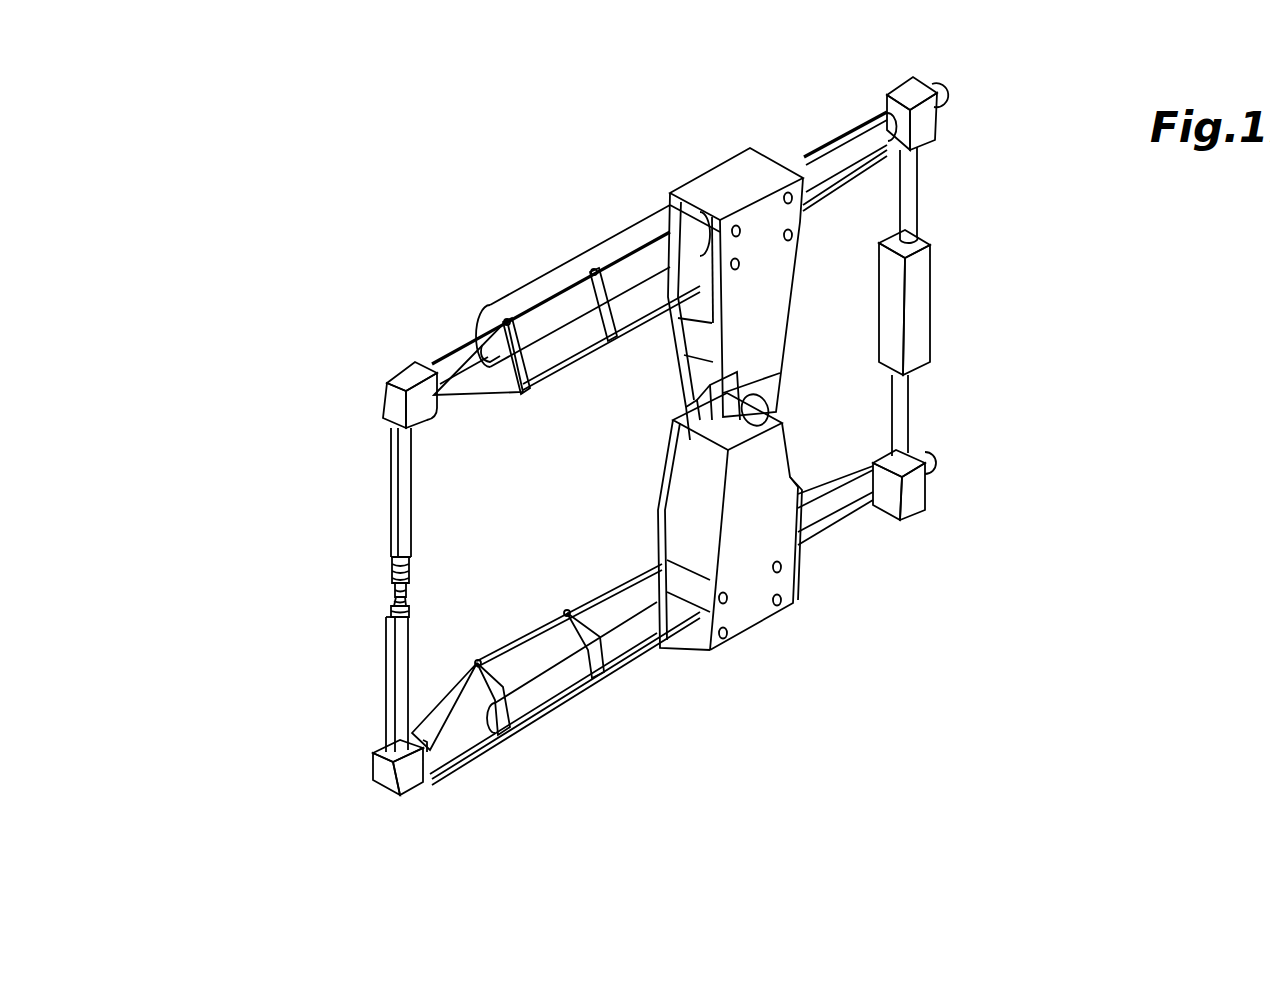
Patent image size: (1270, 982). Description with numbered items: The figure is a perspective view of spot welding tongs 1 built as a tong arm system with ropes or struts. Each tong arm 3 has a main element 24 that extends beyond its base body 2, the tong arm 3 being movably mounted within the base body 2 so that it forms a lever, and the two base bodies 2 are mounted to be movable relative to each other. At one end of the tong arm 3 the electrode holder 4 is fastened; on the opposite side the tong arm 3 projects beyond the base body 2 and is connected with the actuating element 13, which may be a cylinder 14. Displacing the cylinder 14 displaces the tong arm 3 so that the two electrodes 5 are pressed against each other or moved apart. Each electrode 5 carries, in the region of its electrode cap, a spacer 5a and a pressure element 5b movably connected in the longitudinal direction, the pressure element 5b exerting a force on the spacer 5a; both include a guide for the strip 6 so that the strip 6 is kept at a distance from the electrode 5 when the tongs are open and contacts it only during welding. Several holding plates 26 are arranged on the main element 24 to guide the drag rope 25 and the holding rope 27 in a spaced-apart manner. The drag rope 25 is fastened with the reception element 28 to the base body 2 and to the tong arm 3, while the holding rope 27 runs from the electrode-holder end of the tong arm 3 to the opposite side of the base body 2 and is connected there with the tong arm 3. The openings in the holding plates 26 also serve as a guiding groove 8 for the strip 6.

The spot welding tongs 1 is at (322, 268).
The base body 2 is at (775, 315).
The tong arm 3 is at (640, 146).
The electrode holder 4 is at (402, 453).
The electrode 5 is at (330, 563).
The spacer 5a is at (390, 577).
The pressure element 5b is at (390, 565).
The strip 6 is at (397, 482).
The guiding groove 8 is at (505, 318).
The actuating element 13 is at (965, 284).
The cylinder 14 is at (923, 335).
The main element 24 is at (622, 280).
The drag rope 25 is at (445, 368).
The holding plates 26 is at (510, 313).
The holding rope 27 is at (465, 388).
The reception element 28 is at (733, 175).